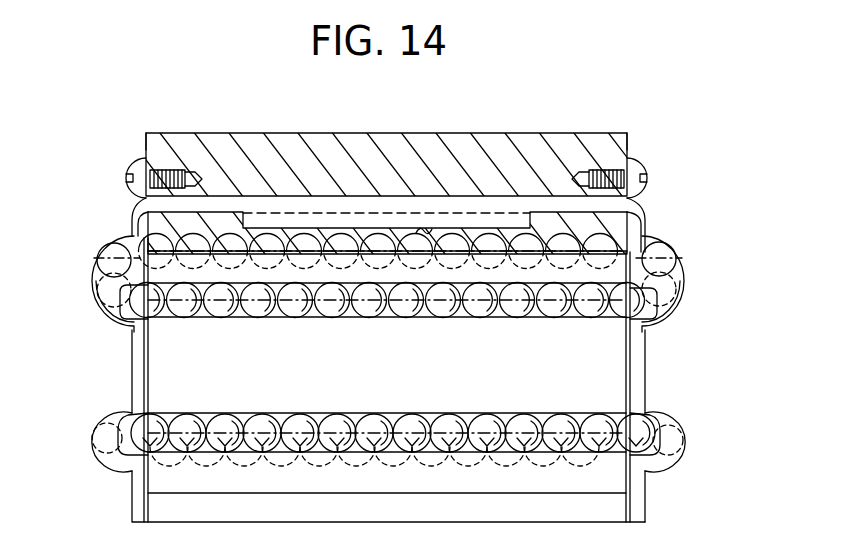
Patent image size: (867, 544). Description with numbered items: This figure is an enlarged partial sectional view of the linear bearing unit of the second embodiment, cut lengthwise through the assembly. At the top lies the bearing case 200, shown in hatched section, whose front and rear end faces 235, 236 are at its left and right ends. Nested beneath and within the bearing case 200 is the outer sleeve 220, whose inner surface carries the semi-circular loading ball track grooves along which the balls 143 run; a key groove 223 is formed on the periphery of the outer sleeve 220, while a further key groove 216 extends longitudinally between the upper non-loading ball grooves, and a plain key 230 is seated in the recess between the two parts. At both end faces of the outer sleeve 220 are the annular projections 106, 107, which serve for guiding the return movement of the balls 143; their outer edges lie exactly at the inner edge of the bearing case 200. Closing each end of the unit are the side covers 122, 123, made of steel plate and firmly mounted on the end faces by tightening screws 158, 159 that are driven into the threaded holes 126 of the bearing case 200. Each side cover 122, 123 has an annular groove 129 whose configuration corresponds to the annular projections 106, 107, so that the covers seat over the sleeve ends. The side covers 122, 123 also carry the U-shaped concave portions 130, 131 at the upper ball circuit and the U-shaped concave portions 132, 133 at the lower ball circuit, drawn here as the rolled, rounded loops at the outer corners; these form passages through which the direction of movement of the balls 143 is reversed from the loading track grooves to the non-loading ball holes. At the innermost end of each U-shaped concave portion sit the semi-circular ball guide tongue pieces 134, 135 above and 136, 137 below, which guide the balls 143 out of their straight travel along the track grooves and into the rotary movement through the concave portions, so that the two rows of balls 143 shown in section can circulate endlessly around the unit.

The bearing case 200 is at (497, 130).
The outer sleeve 220 is at (224, 210).
The plain key 230 is at (390, 197).
The key groove 216 is at (538, 197).
The key groove 223 is at (423, 245).
The threaded hole 126 is at (170, 198).
The front end face 235 is at (145, 137).
The rear end face 236 is at (628, 140).
The tightening screw 158 is at (140, 160).
The tightening screw 159 is at (636, 165).
The annular projection 106 is at (140, 214).
The annular projection 107 is at (637, 220).
The U-shaped concave portion 131 is at (102, 247).
The U-shaped concave portion 130 is at (660, 238).
The ball guide tongue piece 134 is at (112, 316).
The ball guide tongue piece 135 is at (678, 298).
The side cover 122 is at (120, 346).
The side cover 123 is at (730, 376).
The annular groove 129 is at (132, 383).
The ball 143 is at (257, 318).
The U-shaped concave portion 133 is at (95, 455).
The U-shaped concave portion 132 is at (683, 435).
The ball guide tongue piece 136 is at (125, 460).
The ball guide tongue piece 137 is at (667, 420).